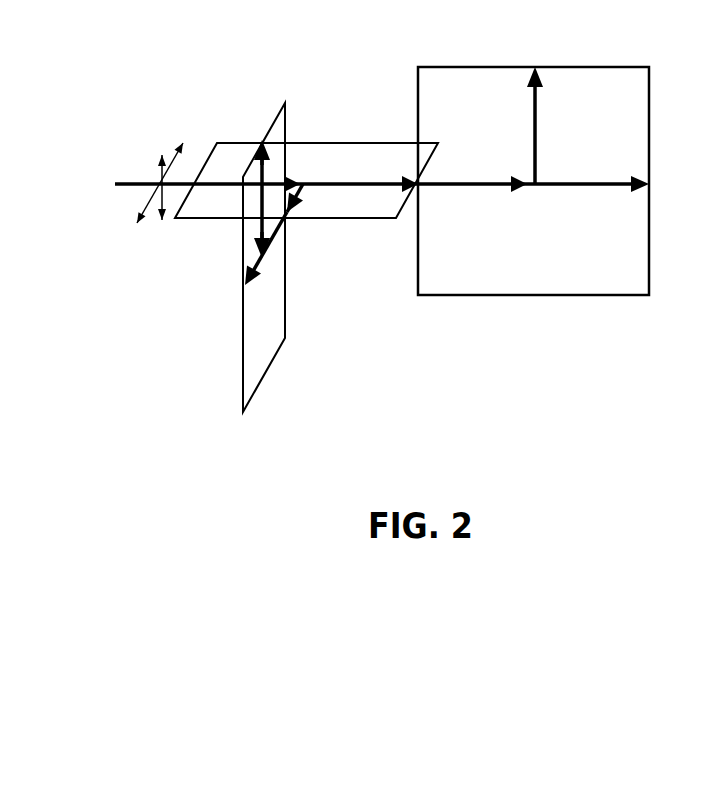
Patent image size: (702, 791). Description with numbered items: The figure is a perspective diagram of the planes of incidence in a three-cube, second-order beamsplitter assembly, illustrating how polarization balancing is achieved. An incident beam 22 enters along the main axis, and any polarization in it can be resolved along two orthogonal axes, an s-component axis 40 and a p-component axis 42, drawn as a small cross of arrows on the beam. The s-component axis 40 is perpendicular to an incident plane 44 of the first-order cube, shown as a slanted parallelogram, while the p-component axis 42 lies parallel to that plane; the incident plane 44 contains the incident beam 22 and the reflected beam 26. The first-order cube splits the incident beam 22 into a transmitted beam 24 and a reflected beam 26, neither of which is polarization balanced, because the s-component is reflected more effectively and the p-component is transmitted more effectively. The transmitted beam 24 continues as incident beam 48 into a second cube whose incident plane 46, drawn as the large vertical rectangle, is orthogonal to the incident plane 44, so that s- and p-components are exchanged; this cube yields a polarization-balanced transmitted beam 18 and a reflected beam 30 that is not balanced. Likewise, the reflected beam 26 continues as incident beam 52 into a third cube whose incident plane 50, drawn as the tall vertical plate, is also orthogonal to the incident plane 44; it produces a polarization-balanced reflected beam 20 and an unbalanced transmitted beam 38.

The transmitted beam 18 is at (608, 185).
The reflected beam 20 is at (263, 203).
The incident beam 22 is at (220, 145).
The transmitted beam 24 is at (350, 184).
The reflected beam 26 is at (302, 193).
The reflected beam 30 is at (538, 108).
The transmitted beam 38 is at (262, 270).
The s-component axis 40 is at (158, 177).
The p-component axis 42 is at (138, 226).
The incident plane 44 is at (237, 143).
The incident plane 46 is at (482, 296).
The incident beam 48 is at (463, 184).
The incident plane 50 is at (268, 372).
The incident beam 52 is at (282, 228).